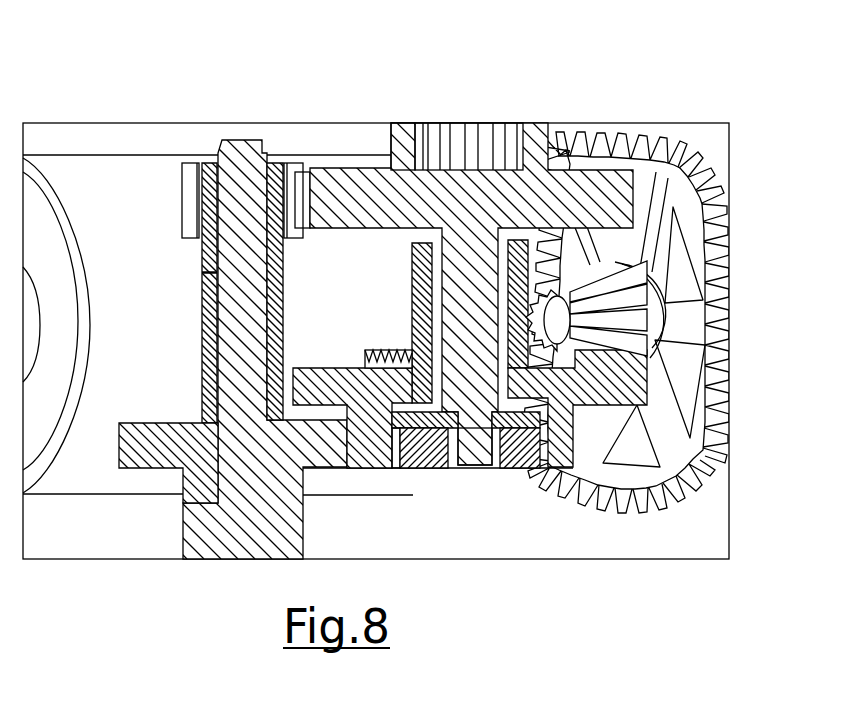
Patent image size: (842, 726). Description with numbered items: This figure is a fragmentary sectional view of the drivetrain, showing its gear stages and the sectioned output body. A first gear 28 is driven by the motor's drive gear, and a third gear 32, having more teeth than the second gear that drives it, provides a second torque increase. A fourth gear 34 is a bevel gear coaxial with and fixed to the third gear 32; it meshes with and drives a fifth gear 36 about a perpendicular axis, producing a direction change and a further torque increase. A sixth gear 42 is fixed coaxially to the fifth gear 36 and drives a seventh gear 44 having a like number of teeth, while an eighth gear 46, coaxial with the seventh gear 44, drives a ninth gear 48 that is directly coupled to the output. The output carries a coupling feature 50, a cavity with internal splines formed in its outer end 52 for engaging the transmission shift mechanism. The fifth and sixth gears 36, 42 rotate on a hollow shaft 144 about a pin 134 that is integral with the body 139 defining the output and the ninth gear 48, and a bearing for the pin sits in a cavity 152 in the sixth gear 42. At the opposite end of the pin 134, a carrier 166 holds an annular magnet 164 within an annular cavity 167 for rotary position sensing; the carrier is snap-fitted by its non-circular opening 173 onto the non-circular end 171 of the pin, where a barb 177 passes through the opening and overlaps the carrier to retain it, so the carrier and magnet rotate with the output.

The first gear 28 is at (558, 133).
The third gear 32 is at (690, 137).
The fourth gear 34 is at (618, 303).
The fifth gear 36 is at (387, 347).
The sixth gear 42 is at (360, 453).
The seventh gear 44 is at (127, 432).
The eighth gear 46 is at (192, 175).
The ninth gear 48 is at (312, 176).
The coupling feature 50 is at (487, 132).
The outer end 52 is at (399, 121).
The pin 134 is at (453, 255).
The body 139 is at (378, 137).
The shaft 144 is at (413, 282).
The cavity 152 is at (392, 447).
The magnet 164 is at (427, 447).
The carrier 166 is at (403, 414).
The cavity 167 is at (533, 432).
The non-circular end 171 is at (472, 463).
The non-circular opening 173 is at (503, 445).
The barb 177 is at (537, 435).